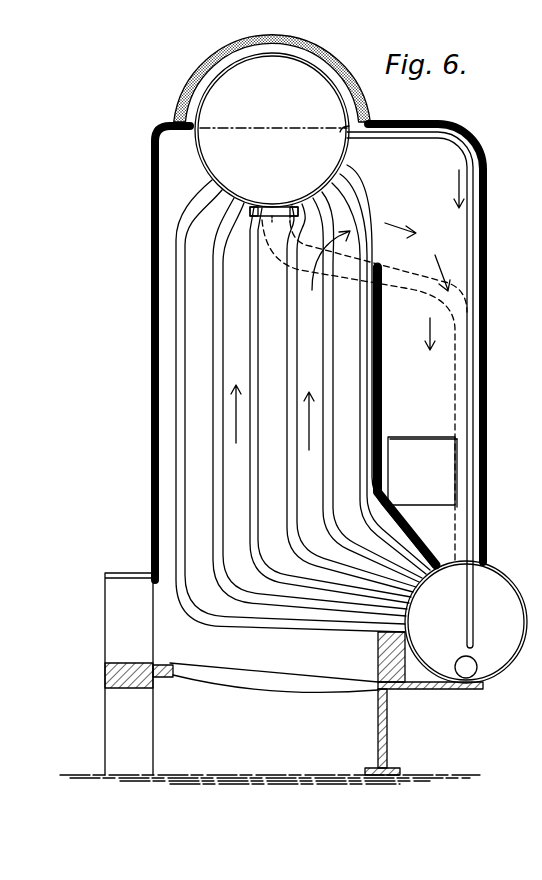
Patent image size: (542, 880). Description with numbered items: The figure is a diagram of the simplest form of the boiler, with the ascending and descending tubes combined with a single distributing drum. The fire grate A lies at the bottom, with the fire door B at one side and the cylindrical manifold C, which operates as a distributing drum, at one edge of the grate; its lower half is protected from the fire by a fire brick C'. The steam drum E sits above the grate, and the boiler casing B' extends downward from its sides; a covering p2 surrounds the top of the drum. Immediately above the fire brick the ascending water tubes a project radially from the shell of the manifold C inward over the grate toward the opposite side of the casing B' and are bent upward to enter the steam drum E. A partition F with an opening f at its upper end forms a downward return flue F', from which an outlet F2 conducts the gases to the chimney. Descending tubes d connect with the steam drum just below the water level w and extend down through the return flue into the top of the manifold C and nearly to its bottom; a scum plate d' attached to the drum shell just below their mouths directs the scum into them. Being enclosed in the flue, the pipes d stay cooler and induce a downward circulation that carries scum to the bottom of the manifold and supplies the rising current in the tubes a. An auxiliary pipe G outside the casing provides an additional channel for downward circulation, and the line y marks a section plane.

The insulating covering p2 is at (186, 84).
The steam drum E is at (200, 105).
The water level w is at (275, 126).
The scum plate d' is at (314, 144).
The descending tubes d is at (410, 390).
The ascending water tubes a is at (212, 446).
The opening f is at (372, 366).
The auxiliary pipe G is at (364, 366).
The partition F is at (407, 416).
The downward return flue F' is at (425, 355).
The outlet F2 is at (422, 472).
The boiler casing B' is at (316, 352).
The cylindrical manifold C is at (466, 622).
The fire brick C' is at (409, 703).
The fire door B is at (270, 678).
The fire grate A is at (258, 683).
The section line y is at (532, 408).